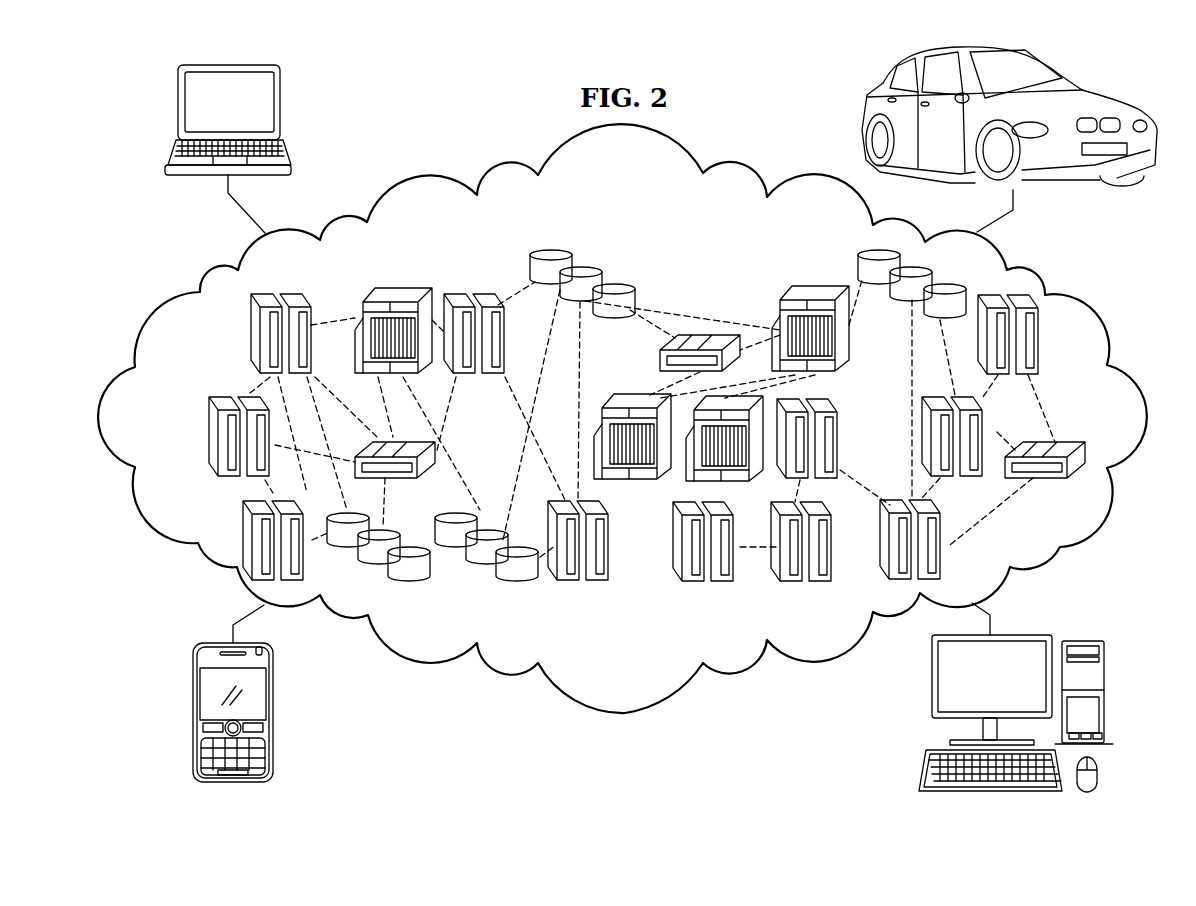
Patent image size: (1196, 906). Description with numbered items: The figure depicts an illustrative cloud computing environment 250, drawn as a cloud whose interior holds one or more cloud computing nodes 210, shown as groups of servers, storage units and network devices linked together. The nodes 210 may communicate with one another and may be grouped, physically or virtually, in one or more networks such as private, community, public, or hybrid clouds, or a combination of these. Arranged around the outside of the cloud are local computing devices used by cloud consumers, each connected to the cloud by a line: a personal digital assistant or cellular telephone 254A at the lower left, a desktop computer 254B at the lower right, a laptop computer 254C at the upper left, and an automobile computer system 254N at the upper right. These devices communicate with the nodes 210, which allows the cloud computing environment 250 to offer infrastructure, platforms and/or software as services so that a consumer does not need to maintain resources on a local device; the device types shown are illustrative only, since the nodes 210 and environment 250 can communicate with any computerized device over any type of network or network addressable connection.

The cloud computing environment 250 is at (430, 148).
The cloud computing nodes 210 is at (624, 720).
The personal digital assistant or cellular telephone 254A is at (192, 712).
The desktop computer 254B is at (1110, 755).
The laptop computer 254C is at (176, 108).
The automobile computer system 254N is at (1123, 83).